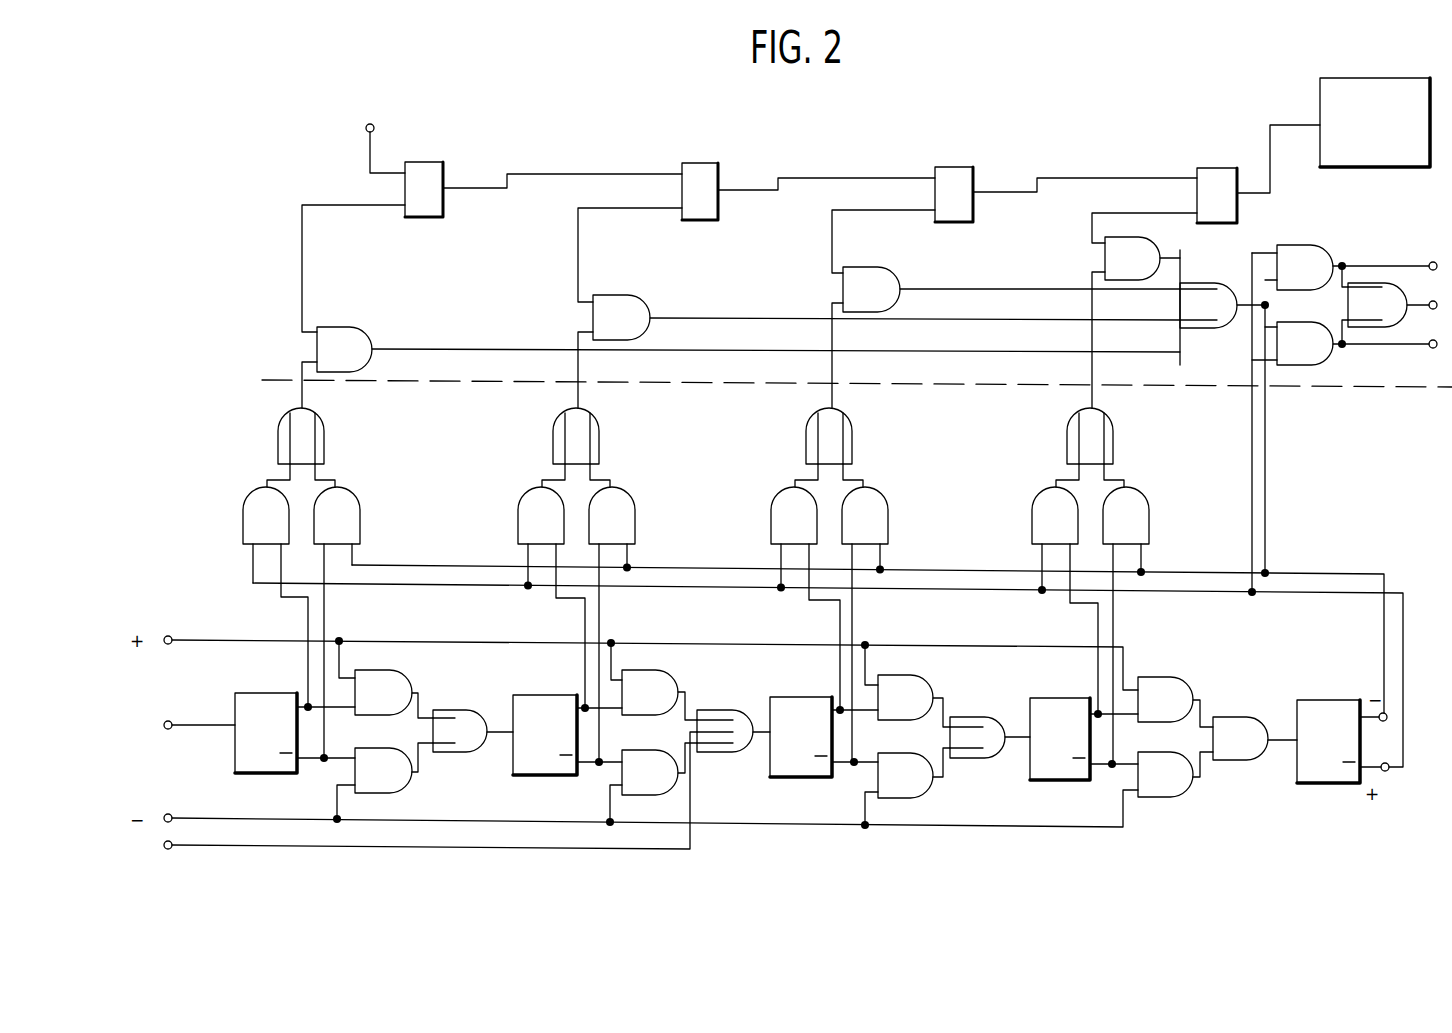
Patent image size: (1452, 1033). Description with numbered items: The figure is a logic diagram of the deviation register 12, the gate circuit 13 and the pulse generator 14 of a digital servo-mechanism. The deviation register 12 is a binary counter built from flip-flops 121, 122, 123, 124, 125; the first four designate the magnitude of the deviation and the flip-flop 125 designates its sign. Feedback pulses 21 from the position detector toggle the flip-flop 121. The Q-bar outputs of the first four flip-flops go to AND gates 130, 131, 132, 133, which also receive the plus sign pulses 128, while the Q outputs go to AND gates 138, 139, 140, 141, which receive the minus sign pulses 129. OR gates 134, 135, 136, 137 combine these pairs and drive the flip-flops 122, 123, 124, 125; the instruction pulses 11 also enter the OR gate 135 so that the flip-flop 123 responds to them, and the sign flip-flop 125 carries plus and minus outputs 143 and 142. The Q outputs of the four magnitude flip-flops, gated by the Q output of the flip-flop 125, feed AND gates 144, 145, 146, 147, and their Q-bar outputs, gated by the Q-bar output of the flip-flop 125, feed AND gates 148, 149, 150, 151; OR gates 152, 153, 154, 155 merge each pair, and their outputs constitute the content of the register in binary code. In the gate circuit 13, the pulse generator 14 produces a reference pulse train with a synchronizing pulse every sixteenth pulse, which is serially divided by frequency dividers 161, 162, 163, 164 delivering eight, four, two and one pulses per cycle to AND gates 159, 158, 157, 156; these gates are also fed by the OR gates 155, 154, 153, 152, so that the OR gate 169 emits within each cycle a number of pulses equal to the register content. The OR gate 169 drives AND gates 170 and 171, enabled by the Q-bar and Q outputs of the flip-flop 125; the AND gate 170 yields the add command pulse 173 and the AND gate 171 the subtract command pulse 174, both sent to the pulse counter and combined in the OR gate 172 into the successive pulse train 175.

The instruction pulses 11 is at (206, 846).
The deviation register 12 is at (181, 469).
The gate circuit 13 is at (221, 277).
The pulse generator 14 is at (1407, 60).
The feedback pulses 21 is at (208, 728).
The flip-flop 121 is at (248, 692).
The flip-flop 122 is at (543, 692).
The flip-flop 123 is at (791, 694).
The flip-flop 124 is at (1055, 696).
The flip-flop 125 is at (1325, 696).
The plus sign pulses 128 is at (172, 640).
The minus sign pulses 129 is at (172, 820).
The AND gate 130 is at (396, 682).
The AND gate 131 is at (668, 681).
The AND gate 132 is at (923, 686).
The AND gate 133 is at (1184, 686).
The OR gate 134 is at (448, 717).
The OR gate 135 is at (756, 700).
The OR gate 136 is at (1008, 700).
The OR gate 137 is at (1238, 722).
The AND gate 138 is at (405, 785).
The AND gate 139 is at (670, 797).
The AND gate 140 is at (920, 799).
The AND gate 141 is at (1171, 799).
The plus sign output terminal 142 is at (1387, 773).
The minus sign output terminal 143 is at (1384, 732).
The AND gate 144 is at (246, 497).
The AND gate 145 is at (524, 497).
The AND gate 146 is at (777, 497).
The AND gate 147 is at (1037, 497).
The AND gate 148 is at (354, 499).
The AND gate 149 is at (629, 499).
The AND gate 150 is at (882, 499).
The AND gate 151 is at (1144, 499).
The OR gate 152 is at (324, 444).
The OR gate 153 is at (599, 444).
The OR gate 154 is at (852, 444).
The OR gate 155 is at (1113, 447).
The AND gate 156 is at (364, 336).
The AND gate 157 is at (643, 310).
The AND gate 158 is at (895, 288).
The AND gate 159 is at (1143, 252).
The frequency divider 161 is at (1207, 163).
The frequency divider 162 is at (966, 169).
The frequency divider 163 is at (713, 166).
The frequency divider 164 is at (436, 166).
The OR gate 169 is at (1238, 266).
The AND gate 170 is at (1319, 255).
The AND gate 171 is at (1313, 367).
The OR gate 172 is at (1397, 300).
The add command pulse 173 is at (1412, 252).
The subtract command pulse 174 is at (1388, 350).
The successive pulse train 175 is at (1410, 309).